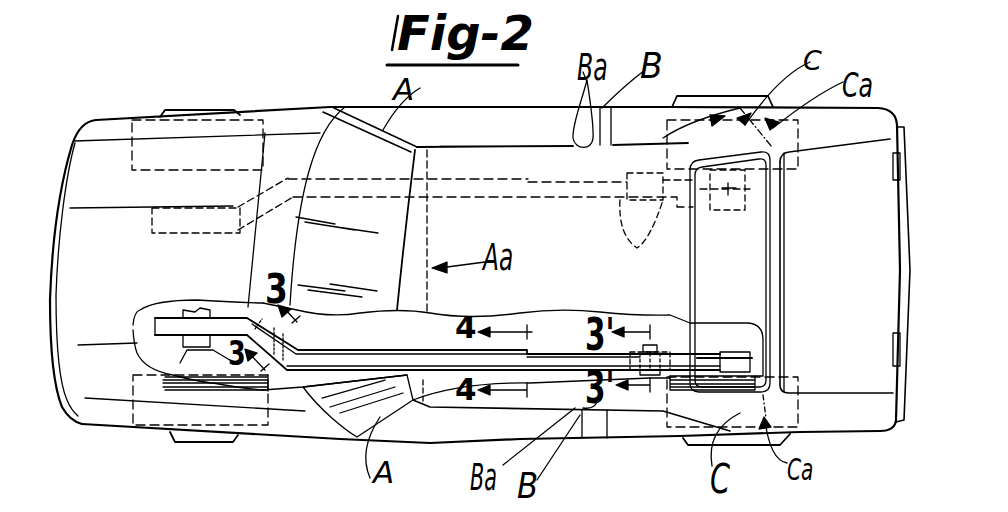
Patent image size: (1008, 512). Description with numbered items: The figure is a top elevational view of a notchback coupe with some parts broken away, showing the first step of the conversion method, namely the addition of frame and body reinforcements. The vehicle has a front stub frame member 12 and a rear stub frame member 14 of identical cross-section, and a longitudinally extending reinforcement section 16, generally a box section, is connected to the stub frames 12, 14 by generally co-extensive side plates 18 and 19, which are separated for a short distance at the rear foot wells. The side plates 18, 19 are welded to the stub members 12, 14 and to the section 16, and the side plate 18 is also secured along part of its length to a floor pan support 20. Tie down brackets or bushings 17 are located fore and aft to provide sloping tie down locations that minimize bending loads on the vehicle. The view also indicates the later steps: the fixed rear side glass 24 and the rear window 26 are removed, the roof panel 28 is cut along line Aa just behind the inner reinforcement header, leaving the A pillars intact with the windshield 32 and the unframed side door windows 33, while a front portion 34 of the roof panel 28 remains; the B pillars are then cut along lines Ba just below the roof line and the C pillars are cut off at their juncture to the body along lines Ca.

The front stub frame member 12 is at (150, 230).
The rear stub frame member 14 is at (677, 208).
The longitudinally extending section 16 is at (347, 187).
The tie down brackets or bushings 17 is at (282, 213).
The side plate 18 is at (424, 323).
The side plate 19 is at (677, 372).
The floor pan support 20 is at (558, 500).
The rear side glass 24 is at (657, 118).
The rear window 26 is at (755, 237).
The roof panel 28 is at (583, 273).
The windshield 32 is at (322, 259).
The side door windows 33 is at (545, 88).
The front portion of the roof panel 34 is at (400, 264).